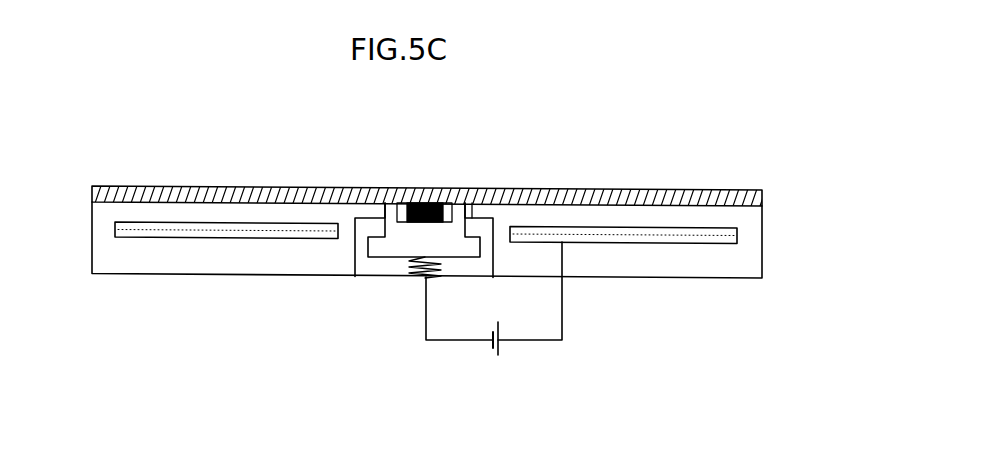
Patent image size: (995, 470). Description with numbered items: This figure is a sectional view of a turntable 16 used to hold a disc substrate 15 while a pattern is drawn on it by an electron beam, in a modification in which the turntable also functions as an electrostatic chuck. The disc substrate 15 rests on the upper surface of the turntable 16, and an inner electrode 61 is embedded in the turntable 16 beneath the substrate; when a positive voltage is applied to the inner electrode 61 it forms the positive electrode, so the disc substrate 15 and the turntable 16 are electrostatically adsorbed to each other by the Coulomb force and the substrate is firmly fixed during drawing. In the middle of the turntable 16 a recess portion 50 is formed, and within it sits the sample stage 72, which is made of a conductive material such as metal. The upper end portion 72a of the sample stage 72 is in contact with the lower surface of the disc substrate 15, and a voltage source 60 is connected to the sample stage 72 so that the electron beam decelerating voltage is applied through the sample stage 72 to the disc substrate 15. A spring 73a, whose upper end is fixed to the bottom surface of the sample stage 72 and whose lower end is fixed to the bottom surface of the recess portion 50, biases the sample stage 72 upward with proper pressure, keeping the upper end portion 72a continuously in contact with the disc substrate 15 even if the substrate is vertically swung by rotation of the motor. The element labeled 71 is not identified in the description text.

The disc substrate 15 is at (242, 187).
The turntable 16 is at (616, 279).
The recess portion 50 is at (485, 217).
The voltage source 60 is at (481, 355).
The inner electrode 61 is at (617, 228).
The conductive member 71 is at (428, 188).
The sample stage 72 is at (377, 257).
The upper end portion 72a is at (457, 201).
The spring 73a is at (393, 278).